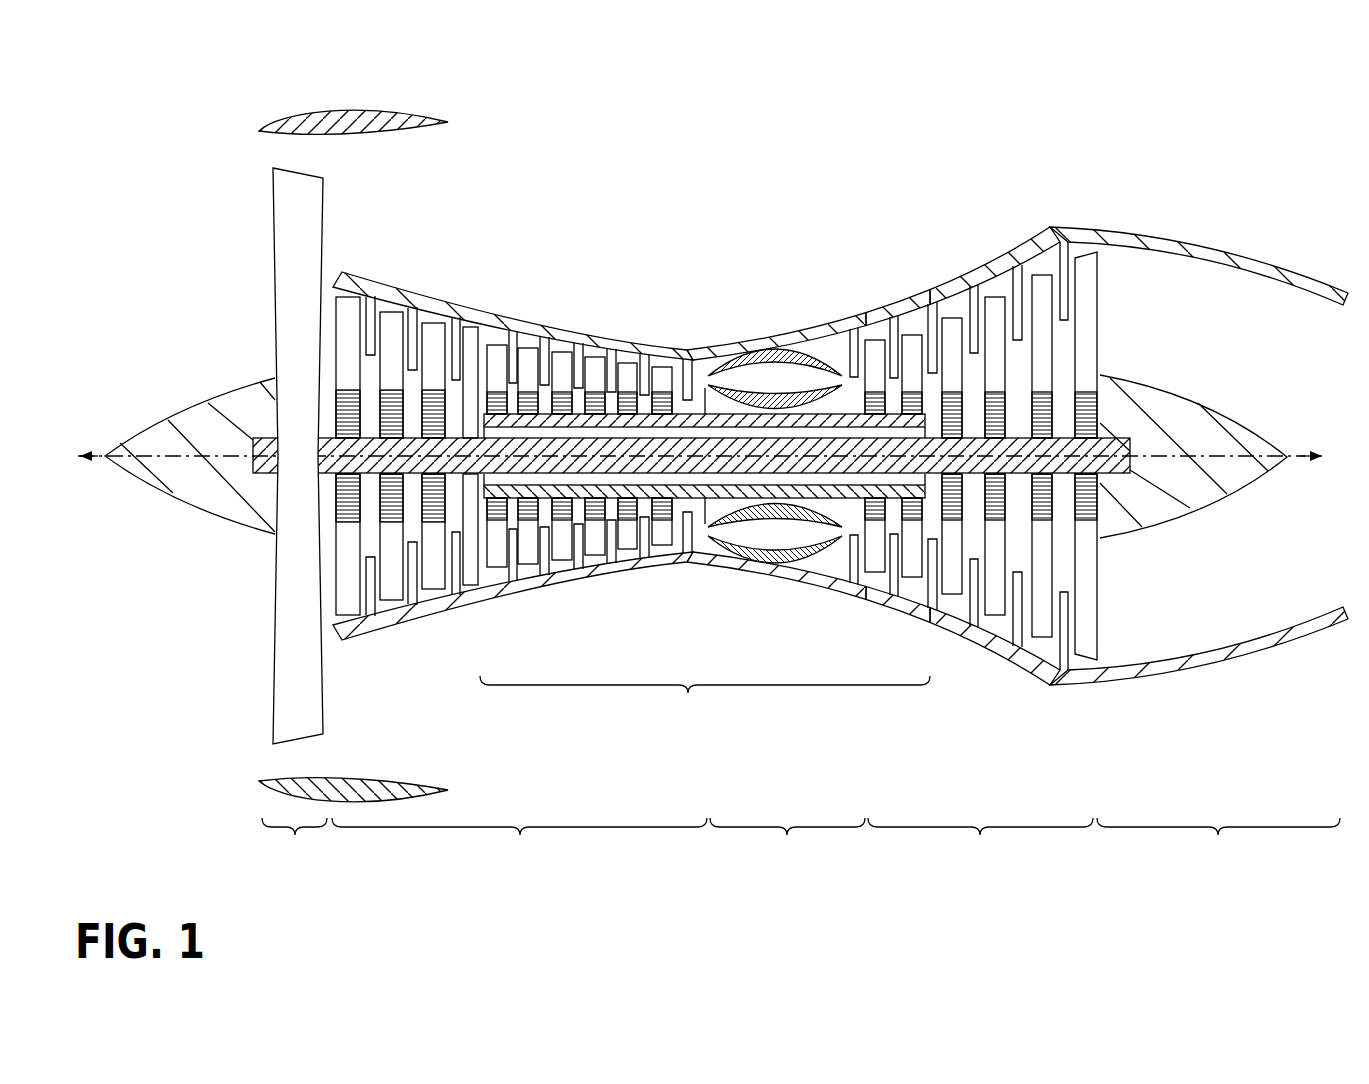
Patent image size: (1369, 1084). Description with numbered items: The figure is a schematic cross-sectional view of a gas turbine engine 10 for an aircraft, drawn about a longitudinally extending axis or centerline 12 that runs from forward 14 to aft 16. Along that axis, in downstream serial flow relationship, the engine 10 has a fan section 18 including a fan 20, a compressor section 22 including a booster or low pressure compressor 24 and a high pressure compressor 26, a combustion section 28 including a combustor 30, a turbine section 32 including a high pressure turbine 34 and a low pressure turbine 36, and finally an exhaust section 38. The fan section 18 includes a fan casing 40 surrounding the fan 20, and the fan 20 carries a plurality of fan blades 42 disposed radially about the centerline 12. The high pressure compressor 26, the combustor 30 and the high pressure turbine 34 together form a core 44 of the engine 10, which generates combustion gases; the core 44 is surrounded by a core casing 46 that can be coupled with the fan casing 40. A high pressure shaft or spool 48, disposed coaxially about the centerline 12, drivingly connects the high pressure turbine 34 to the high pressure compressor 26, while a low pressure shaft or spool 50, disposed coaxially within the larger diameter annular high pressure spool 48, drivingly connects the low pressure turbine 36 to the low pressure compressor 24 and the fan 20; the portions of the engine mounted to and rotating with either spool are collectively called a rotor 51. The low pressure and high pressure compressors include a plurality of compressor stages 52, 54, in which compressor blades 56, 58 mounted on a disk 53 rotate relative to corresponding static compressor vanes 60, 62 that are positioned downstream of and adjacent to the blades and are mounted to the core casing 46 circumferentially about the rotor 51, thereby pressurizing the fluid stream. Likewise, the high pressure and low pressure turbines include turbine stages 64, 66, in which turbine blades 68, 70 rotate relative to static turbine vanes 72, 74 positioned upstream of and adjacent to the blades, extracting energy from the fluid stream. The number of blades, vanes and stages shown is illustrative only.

The gas turbine engine 10 is at (137, 69).
The centerline 12 is at (167, 455).
The forward 14 is at (69, 456).
The aft 16 is at (1332, 456).
The fan section 18 is at (294, 843).
The fan 20 is at (266, 234).
The compressor section 22 is at (519, 843).
The low pressure compressor 24 is at (472, 603).
The high pressure compressor 26 is at (638, 578).
The combustion section 28 is at (787, 843).
The combustor 30 is at (832, 354).
The turbine section 32 is at (980, 843).
The high pressure turbine 34 is at (848, 602).
The low pressure turbine 36 is at (981, 653).
The exhaust section 38 is at (1218, 843).
The fan casing 40 is at (262, 129).
The fan blades 42 is at (285, 690).
The core 44 is at (705, 701).
The core casing 46 is at (753, 337).
The HP shaft or spool 48 is at (703, 416).
The LP shaft or spool 50 is at (472, 322).
The rotor 51 is at (619, 424).
The compressor stages 52 is at (334, 260).
The disk 53 is at (417, 308).
The compressor stages 54 is at (497, 304).
The compressor blades 56 is at (352, 304).
The compressor blades 58 is at (508, 312).
The static compressor vanes 60 is at (383, 318).
The static compressor vanes 62 is at (530, 312).
The turbine stages 64 is at (876, 302).
The turbine stages 66 is at (1010, 240).
The turbine blades 68 is at (911, 346).
The turbine blades 70 is at (1041, 300).
The static turbine vanes 72 is at (894, 345).
The static turbine vanes 74 is at (1020, 268).